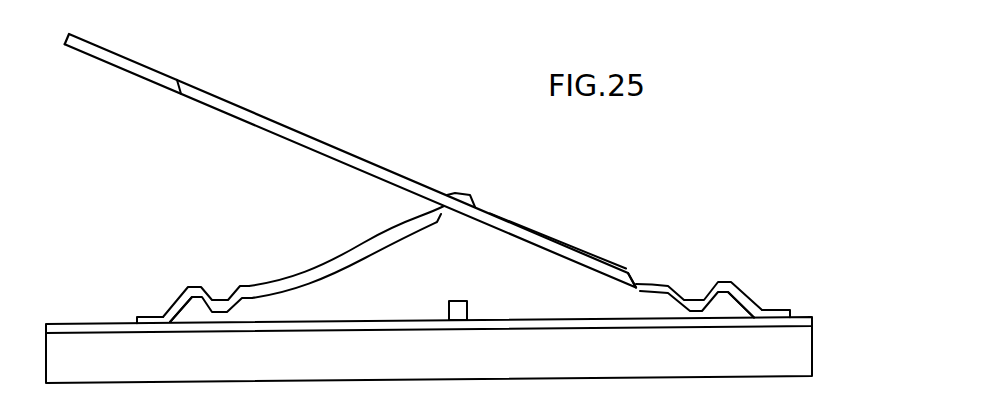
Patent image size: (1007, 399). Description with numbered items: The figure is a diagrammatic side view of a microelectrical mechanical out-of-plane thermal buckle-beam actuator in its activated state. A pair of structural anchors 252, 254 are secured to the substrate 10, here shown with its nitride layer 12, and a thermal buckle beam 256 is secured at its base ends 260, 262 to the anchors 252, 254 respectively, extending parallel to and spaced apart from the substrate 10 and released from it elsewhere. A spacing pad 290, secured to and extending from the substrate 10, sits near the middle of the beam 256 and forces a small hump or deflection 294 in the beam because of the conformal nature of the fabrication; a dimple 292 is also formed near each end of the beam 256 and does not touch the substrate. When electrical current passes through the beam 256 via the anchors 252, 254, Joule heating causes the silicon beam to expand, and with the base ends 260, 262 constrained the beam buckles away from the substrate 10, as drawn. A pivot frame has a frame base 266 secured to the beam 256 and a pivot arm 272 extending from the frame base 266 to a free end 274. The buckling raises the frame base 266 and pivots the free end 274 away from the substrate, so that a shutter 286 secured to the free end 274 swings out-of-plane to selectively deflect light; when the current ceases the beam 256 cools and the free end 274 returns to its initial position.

The substrate 10 is at (318, 361).
The nitride layer 12 is at (598, 327).
The structural anchor 252 is at (158, 317).
The structural anchor 254 is at (759, 309).
The thermal buckle beam 256 is at (352, 249).
The base end 260 is at (254, 289).
The base end 262 is at (672, 285).
The frame base 266 is at (636, 273).
The pivot arm 272 is at (380, 172).
The free end 274 is at (197, 92).
The shutter 286 is at (118, 63).
The spacing pad 290 is at (456, 320).
The dimple 292 is at (177, 313).
The hump or deflection 294 is at (470, 197).